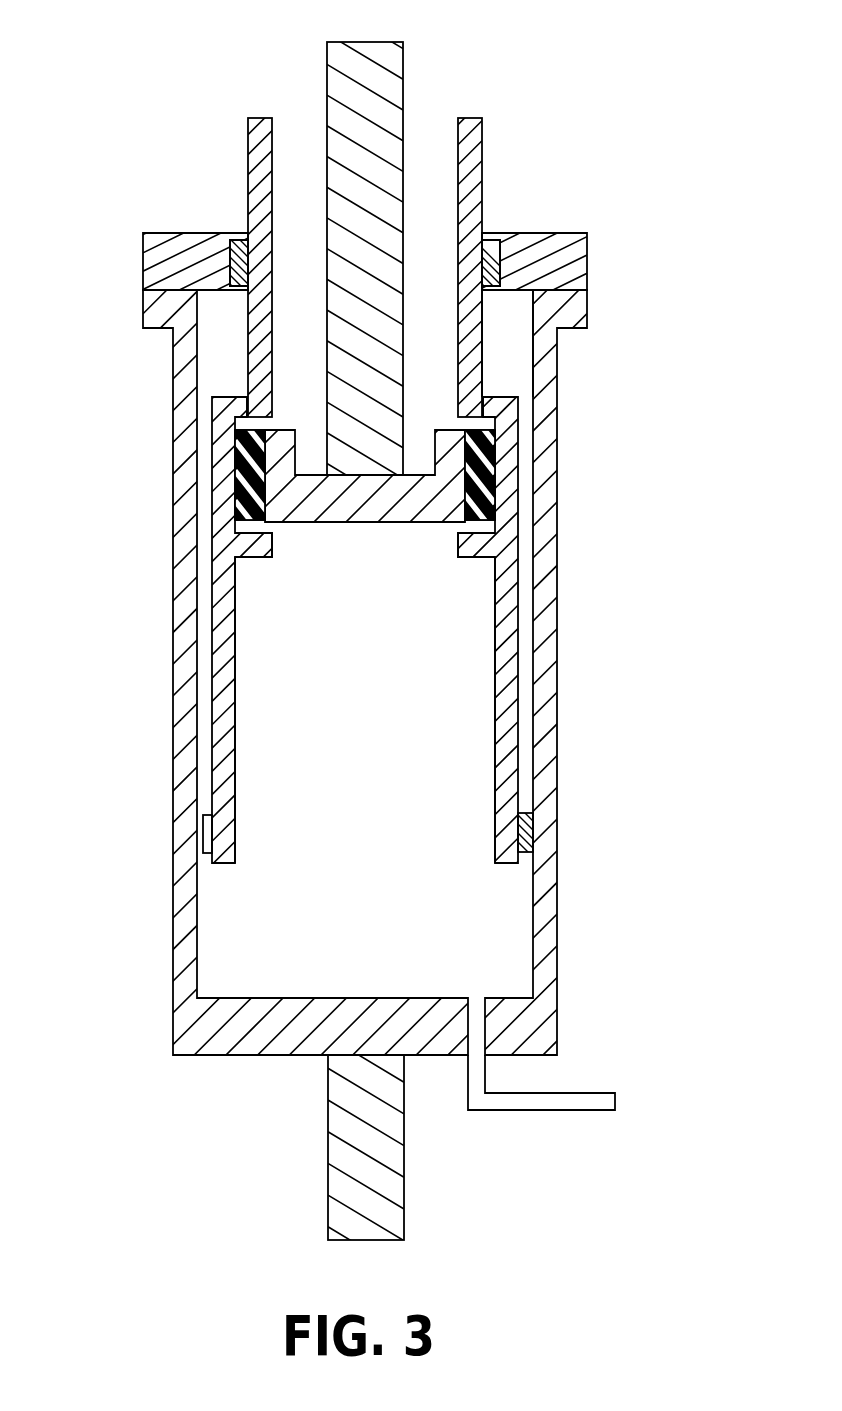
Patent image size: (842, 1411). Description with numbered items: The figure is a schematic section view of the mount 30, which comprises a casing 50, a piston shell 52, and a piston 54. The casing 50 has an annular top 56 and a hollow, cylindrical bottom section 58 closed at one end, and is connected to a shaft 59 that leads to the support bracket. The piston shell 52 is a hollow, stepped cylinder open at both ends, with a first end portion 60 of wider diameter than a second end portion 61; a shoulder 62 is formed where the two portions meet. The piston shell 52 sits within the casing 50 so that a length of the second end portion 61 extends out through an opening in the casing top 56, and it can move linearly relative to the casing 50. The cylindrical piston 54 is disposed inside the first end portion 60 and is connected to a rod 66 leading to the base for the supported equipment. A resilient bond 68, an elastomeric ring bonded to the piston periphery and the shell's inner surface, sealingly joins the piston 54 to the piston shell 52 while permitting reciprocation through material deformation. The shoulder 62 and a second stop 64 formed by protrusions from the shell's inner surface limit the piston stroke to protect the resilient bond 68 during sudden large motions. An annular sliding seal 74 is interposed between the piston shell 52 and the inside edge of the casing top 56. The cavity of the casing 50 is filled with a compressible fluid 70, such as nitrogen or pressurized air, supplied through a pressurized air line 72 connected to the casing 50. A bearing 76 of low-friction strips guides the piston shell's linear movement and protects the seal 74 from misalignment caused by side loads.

The mount 30 is at (613, 97).
The casing 50 is at (375, 705).
The piston shell 52 is at (520, 700).
The piston 54 is at (490, 463).
The annular top 56 is at (578, 263).
The cylindrical bottom section 58 is at (540, 970).
The shaft 59 is at (373, 1133).
The first end portion 60 is at (225, 683).
The second end portion 61 is at (258, 198).
The shoulder 62 is at (482, 396).
The stop 64 is at (478, 538).
The rod 66 is at (363, 103).
The resilient bond 68 is at (497, 497).
The compressible fluid 70 is at (507, 330).
The pressurized air line 72 is at (600, 1093).
The annular seal 74 is at (510, 242).
The bearing 76 is at (210, 833).